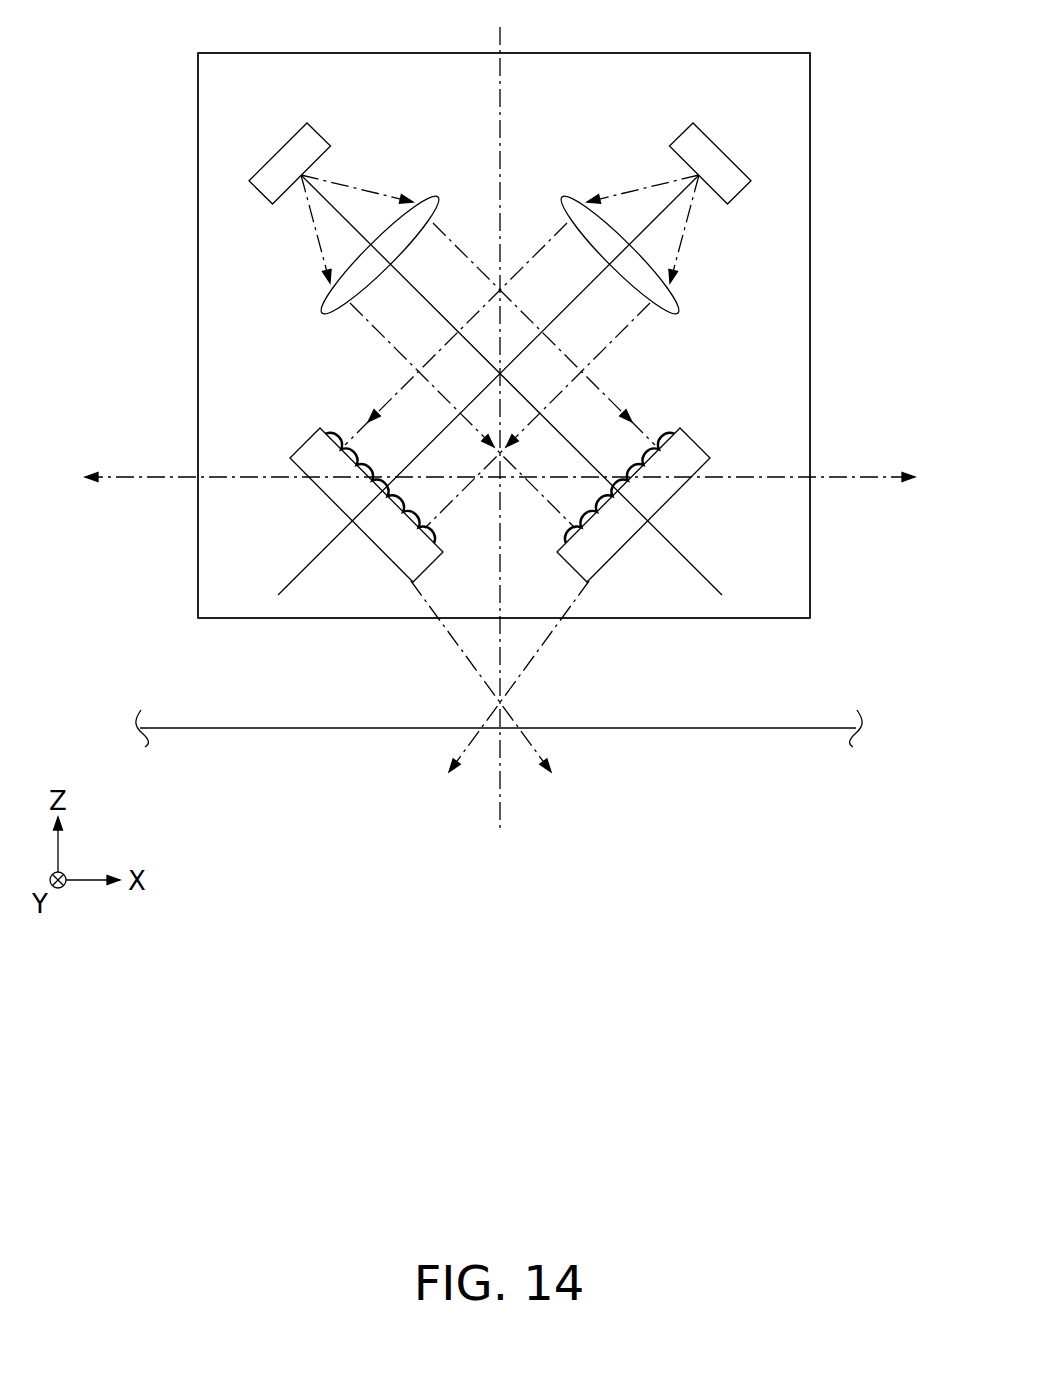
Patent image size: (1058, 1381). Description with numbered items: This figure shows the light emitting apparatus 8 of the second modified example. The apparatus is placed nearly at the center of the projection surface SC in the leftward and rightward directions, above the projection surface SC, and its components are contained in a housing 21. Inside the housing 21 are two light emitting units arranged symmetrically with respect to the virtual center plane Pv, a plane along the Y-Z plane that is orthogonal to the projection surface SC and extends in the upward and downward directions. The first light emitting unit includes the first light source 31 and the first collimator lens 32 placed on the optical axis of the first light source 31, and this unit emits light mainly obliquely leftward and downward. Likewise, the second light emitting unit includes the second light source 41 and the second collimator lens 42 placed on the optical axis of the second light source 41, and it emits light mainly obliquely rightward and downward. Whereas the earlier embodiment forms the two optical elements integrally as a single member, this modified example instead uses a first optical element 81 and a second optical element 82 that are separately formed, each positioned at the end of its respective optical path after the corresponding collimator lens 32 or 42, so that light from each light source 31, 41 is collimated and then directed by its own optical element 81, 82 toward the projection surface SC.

The light emitting apparatus 8 is at (860, 74).
The housing 21 is at (811, 277).
The second light source 41 is at (282, 157).
The second collimator lens 42 is at (432, 194).
The first light source 31 is at (718, 157).
The first collimator lens 32 is at (568, 194).
The first optical element 81 is at (327, 478).
The second optical element 82 is at (673, 478).
The projection surface SC is at (820, 728).
The virtual center plane Pv is at (500, 808).